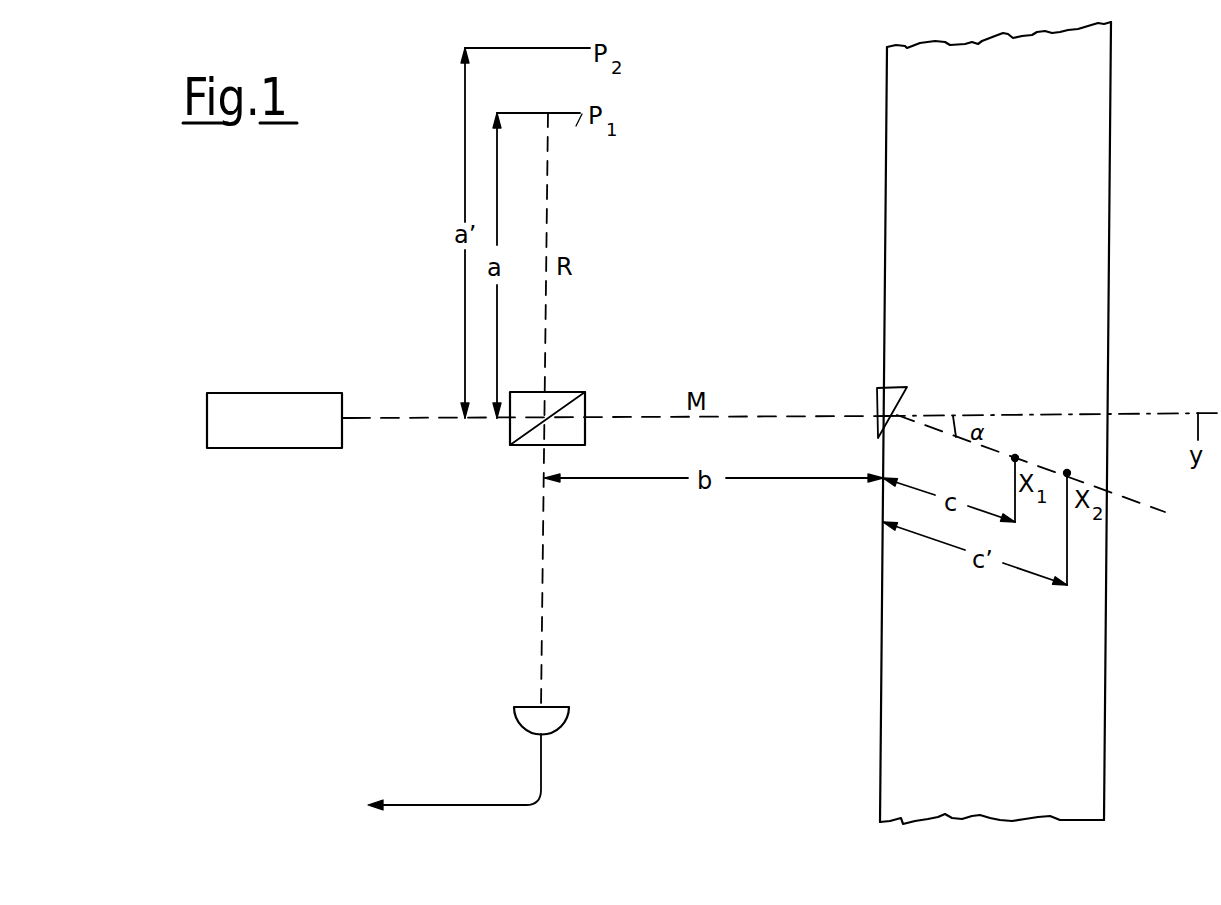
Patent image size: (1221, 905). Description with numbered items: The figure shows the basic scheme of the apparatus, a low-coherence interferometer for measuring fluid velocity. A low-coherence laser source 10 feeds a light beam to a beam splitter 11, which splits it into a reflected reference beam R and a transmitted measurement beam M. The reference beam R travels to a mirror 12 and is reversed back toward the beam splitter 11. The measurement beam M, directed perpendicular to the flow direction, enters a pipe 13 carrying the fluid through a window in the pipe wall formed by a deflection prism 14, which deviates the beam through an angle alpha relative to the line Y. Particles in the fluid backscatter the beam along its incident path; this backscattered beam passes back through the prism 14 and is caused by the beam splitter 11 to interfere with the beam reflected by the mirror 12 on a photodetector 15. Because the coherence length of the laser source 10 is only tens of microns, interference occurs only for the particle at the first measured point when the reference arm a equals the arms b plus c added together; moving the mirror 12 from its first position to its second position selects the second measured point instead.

The low-coherence laser source 10 is at (245, 432).
The beam splitter 11 is at (576, 410).
The mirror 12 is at (576, 126).
The pipe 13 is at (1106, 227).
The deflection prism 14 is at (884, 393).
The photodetector 15 is at (550, 718).